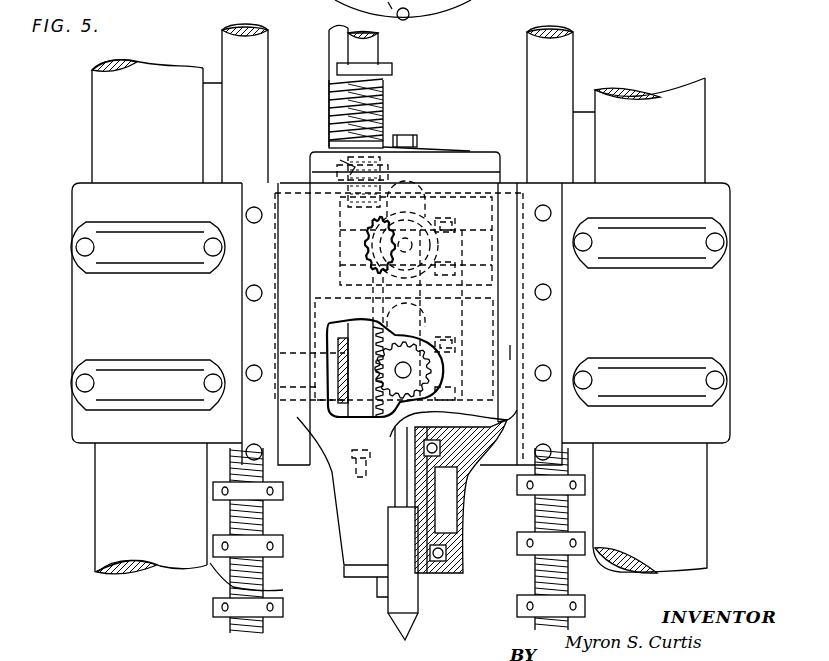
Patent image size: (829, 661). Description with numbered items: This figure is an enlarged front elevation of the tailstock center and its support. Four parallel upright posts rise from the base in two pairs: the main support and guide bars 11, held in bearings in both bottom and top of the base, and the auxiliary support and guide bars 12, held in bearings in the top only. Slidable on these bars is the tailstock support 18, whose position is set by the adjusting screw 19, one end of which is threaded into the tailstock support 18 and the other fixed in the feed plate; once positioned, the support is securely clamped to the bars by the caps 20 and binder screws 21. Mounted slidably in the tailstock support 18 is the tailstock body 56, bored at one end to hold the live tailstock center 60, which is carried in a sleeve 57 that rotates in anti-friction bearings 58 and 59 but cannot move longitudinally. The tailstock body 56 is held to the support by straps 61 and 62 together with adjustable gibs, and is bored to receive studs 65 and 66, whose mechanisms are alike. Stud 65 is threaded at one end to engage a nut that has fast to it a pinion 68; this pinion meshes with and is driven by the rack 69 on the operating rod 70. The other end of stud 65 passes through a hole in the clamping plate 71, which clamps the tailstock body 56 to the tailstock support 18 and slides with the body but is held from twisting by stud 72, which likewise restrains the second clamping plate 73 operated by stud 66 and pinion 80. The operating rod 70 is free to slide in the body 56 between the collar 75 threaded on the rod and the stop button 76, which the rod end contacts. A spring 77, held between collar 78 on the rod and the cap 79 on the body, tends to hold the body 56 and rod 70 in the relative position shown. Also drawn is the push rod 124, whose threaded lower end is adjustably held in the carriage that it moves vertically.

The main support and guide bars 11 is at (399, 317).
The auxiliary support and guide bars 12 is at (213, 157).
The push rod 124 is at (247, 25).
The tailstock support 18 is at (77, 326).
The adjusting screw 19 is at (328, 50).
The caps 20 is at (399, 314).
The binder screws 21 is at (80, 250).
The tailstock body 56 is at (421, 374).
The sleeve 57 is at (433, 577).
The anti-friction bearing 58 is at (462, 545).
The anti-friction bearing 59 is at (444, 470).
The live tailstock center 60 is at (408, 632).
The strap 61 is at (521, 324).
The strap 62 is at (276, 324).
The stud 65 is at (413, 241).
The stud 66 is at (407, 370).
The pinion 68 is at (372, 240).
The rack 69 is at (370, 258).
The operating rod 70 is at (378, 43).
The clamping plate 71 is at (462, 215).
The stud 72 is at (462, 324).
The second clamping plate 73 is at (510, 356).
The collar 75 is at (340, 165).
The stop button 76 is at (360, 450).
The spring 77 is at (383, 103).
The collar 78 is at (393, 70).
The cap 79 is at (422, 146).
The pinion 80 is at (442, 368).